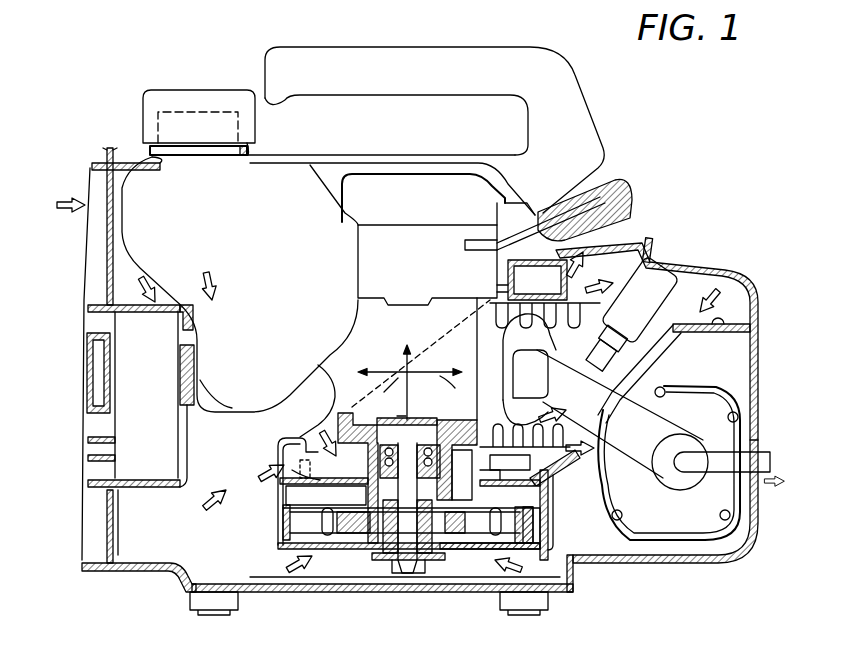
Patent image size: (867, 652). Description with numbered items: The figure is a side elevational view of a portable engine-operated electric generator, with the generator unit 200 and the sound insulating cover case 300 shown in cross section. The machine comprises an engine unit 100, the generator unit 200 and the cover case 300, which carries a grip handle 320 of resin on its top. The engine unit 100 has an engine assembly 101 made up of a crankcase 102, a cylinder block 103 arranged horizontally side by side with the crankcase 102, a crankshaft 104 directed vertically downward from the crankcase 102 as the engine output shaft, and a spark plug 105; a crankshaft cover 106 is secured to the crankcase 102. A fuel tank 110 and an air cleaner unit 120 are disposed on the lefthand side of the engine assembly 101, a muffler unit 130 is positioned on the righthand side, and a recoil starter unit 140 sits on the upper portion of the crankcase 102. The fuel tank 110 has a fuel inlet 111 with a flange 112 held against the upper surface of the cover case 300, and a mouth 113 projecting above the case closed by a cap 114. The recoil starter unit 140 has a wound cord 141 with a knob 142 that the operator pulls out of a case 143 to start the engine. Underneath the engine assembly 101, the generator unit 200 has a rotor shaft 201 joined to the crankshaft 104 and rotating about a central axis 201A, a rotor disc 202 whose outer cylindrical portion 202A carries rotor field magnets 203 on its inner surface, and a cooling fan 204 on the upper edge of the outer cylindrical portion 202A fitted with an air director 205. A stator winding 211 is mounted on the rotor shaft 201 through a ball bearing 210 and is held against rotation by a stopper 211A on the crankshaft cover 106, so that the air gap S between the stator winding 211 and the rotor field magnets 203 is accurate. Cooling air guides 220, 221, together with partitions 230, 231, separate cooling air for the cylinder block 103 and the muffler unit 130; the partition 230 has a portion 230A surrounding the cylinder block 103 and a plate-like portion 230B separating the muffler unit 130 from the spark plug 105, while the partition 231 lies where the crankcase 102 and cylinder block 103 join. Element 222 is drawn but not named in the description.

The engine unit 100 is at (384, 405).
The engine assembly 101 is at (333, 372).
The crankcase 102 is at (323, 388).
The cylinder block 103 is at (505, 412).
The crankshaft 104 is at (412, 562).
The spark plug 105 is at (689, 312).
The crankshaft cover 106 is at (386, 440).
The fuel tank 110 is at (236, 412).
The fuel inlet 111 is at (246, 152).
The flange 112 is at (162, 157).
The mouth 113 is at (166, 120).
The cap 114 is at (200, 102).
The air cleaner unit 120 is at (166, 480).
The muffler unit 130 is at (695, 528).
The recoil starter unit 140 is at (470, 200).
The cord 141 is at (600, 215).
The knob 142 is at (622, 184).
The case 143 is at (407, 287).
The generator unit 200 is at (188, 548).
The rotor shaft 201 is at (386, 558).
The central axis of rotation 201A is at (434, 565).
The rotor disc 202 is at (300, 555).
The outer cylindrical portion 202A is at (292, 508).
The rotor field magnets 203 is at (290, 528).
The cooling fan 204 is at (280, 556).
The air director 205 is at (292, 472).
The ball bearing 210 is at (362, 552).
The stator winding 211 is at (492, 565).
The stopper 211A is at (348, 560).
The cooling air guide 220 is at (274, 468).
The cooling air guide 221 is at (352, 478).
The exhaust duct 222 is at (562, 482).
The partition 230 is at (712, 277).
The portion of partition 230A is at (598, 263).
The plate-like portion 230B is at (714, 330).
The partition 231 is at (575, 269).
The sound insulating cover case 300 is at (792, 275).
The grip handle 320 is at (520, 52).
The air gap S is at (552, 545).